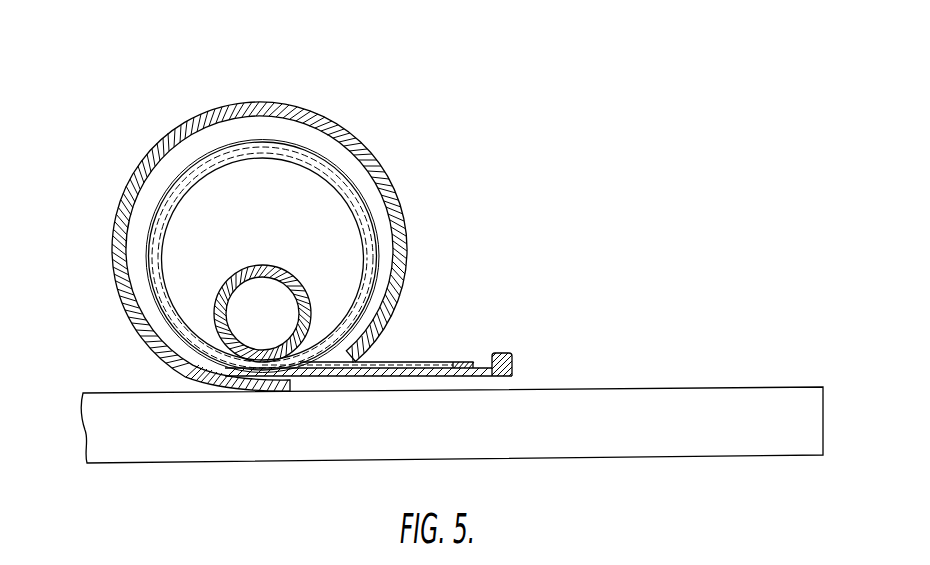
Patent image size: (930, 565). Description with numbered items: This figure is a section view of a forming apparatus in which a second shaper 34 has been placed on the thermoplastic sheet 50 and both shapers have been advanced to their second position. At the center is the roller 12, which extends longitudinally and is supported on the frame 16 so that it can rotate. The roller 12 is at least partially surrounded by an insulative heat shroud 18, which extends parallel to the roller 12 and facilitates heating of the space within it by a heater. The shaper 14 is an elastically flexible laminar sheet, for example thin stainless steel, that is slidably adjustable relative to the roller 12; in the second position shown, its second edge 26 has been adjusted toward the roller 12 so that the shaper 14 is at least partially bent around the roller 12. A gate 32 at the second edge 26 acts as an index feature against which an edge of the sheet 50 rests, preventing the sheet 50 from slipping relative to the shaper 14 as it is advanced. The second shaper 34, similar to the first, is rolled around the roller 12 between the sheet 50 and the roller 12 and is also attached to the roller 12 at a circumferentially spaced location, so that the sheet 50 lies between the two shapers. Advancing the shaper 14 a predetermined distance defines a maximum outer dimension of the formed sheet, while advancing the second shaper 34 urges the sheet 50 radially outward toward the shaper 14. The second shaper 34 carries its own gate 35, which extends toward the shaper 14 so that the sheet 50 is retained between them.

The insulative heat shroud 18 is at (192, 117).
The second shaper 34 is at (235, 160).
The thermoplastic sheet 50 is at (158, 310).
The roller 12 is at (231, 272).
The shaper 14 is at (340, 378).
The gate 35 is at (480, 370).
The gate 32 is at (500, 353).
The second edge 26 is at (513, 363).
The frame 16 is at (823, 410).